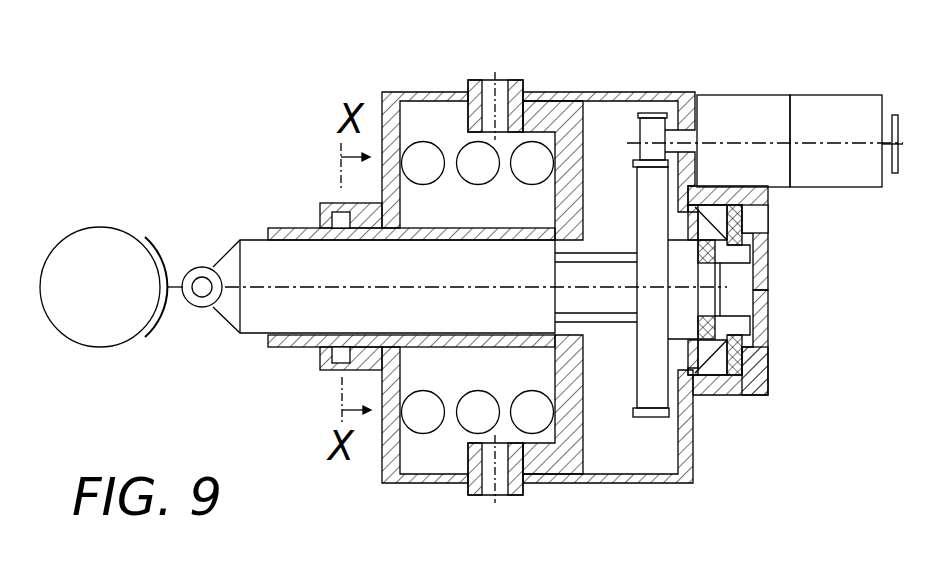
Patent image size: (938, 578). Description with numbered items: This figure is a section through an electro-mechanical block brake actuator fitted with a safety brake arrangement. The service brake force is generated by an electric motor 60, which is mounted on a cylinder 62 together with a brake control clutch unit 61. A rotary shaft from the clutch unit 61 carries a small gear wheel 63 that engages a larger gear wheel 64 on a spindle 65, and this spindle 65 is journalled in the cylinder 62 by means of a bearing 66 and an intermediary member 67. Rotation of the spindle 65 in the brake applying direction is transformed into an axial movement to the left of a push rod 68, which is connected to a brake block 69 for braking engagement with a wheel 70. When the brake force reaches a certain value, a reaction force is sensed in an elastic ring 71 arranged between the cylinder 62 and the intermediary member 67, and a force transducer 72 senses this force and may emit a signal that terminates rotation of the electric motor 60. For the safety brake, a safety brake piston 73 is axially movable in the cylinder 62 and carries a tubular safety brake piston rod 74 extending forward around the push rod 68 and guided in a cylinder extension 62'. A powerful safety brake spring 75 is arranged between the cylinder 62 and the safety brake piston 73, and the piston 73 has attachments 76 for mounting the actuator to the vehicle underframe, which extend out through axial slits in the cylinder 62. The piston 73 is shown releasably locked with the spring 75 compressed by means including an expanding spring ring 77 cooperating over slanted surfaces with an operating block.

The electric motor 60 is at (838, 105).
The brake control clutch unit 61 is at (763, 103).
The cylinder 62 is at (538, 245).
The cylinder extension 62' is at (323, 187).
The small gear wheel 63 is at (662, 114).
The larger gear wheel 64 is at (653, 400).
The spindle 65 is at (617, 305).
The bearing 66 is at (723, 294).
The intermediary member 67 is at (720, 395).
The push rod 68 is at (257, 250).
The brake block 69 is at (162, 212).
The wheel 70 is at (78, 247).
The elastic ring 71 is at (768, 348).
The force transducer 72 is at (766, 226).
The safety brake piston 73 is at (567, 99).
The safety brake piston rod 74 is at (277, 349).
The safety brake spring 75 is at (422, 425).
The attachments 76 is at (515, 82).
The expanding spring ring 77 is at (333, 370).